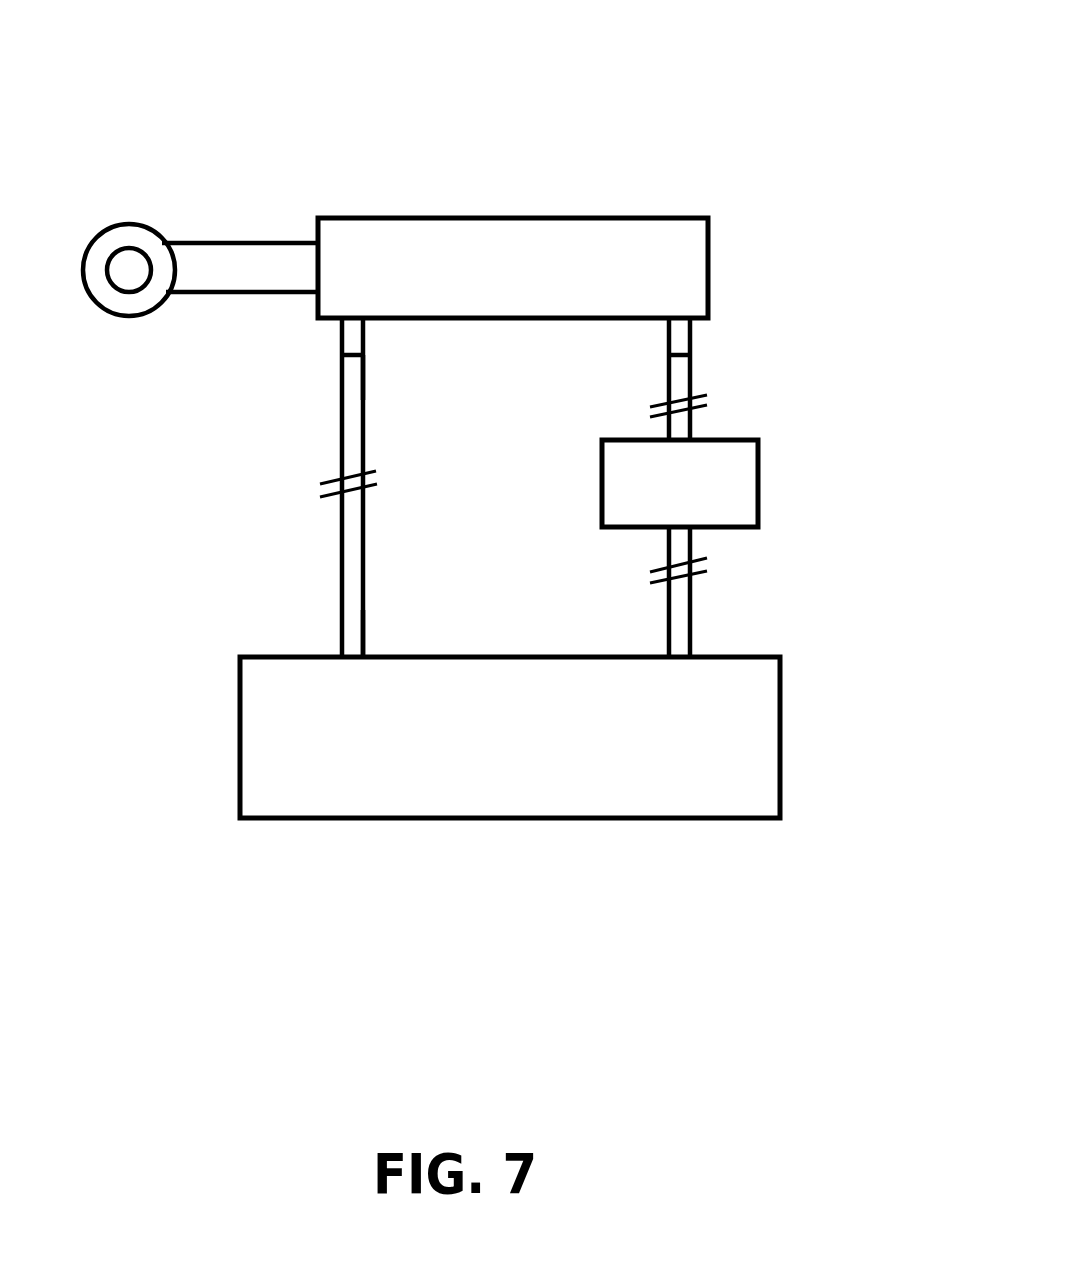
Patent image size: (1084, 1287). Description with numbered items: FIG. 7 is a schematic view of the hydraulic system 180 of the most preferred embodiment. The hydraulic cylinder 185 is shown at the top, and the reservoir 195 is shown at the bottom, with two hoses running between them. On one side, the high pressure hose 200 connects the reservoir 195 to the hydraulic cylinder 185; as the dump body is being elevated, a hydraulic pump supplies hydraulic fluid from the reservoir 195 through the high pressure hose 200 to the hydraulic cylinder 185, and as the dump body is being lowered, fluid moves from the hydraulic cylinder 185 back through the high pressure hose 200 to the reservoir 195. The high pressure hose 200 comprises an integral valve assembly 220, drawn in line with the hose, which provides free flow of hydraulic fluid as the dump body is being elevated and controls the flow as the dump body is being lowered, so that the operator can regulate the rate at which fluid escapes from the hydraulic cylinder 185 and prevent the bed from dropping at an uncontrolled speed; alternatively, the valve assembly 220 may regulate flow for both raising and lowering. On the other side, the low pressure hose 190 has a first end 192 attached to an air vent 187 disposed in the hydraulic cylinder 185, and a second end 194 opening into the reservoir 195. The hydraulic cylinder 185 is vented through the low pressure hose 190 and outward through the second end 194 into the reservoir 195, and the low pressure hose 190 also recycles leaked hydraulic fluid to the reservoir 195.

The hydraulic system 180 is at (650, 68).
The hydraulic cylinder 185 is at (582, 289).
The air vent 187 is at (250, 380).
The low pressure hose 190 is at (232, 487).
The first end 192 is at (458, 388).
The second end 194 is at (455, 610).
The reservoir 195 is at (574, 755).
The high pressure hose 200 is at (770, 477).
The valve assembly 220 is at (727, 503).